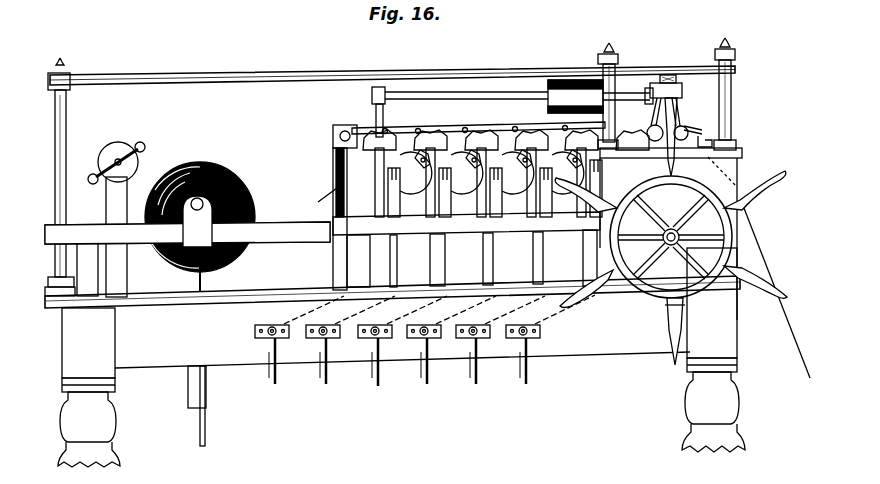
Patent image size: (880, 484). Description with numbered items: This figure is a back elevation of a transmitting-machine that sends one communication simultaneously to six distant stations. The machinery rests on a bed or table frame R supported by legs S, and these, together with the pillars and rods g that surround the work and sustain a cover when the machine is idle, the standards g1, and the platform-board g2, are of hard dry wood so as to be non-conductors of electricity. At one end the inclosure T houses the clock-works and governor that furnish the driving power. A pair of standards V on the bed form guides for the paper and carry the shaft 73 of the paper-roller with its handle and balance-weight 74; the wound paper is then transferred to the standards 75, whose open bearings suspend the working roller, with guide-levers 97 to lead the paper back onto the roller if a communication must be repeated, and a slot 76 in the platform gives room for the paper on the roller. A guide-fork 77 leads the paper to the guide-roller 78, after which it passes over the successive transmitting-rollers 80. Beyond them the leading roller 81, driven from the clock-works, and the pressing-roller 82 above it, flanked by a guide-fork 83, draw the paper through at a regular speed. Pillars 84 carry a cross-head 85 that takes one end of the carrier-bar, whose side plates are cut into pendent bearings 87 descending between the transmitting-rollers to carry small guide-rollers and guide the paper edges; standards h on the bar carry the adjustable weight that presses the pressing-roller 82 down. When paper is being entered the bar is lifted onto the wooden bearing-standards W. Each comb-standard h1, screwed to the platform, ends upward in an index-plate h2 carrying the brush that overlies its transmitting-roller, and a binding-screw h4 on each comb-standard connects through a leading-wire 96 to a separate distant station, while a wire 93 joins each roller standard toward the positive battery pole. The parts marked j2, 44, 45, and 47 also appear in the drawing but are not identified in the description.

The pillars and rods g is at (57, 183).
The standards g1 is at (87, 269).
The platform-board g2 is at (466, 223).
The standards h is at (460, 112).
The comb-standards h1 is at (478, 182).
The index-plate h2 is at (506, 138).
The binding-screw h4 is at (399, 339).
The top bracket rail j2 is at (478, 124).
The inclosure of the clock-works T is at (671, 234).
The bed or table frame R is at (392, 322).
The legs S is at (401, 357).
The standards V is at (187, 237).
The wooden bearing-standards W is at (465, 258).
The slat 44 is at (478, 259).
The connecting wire 45 is at (444, 307).
The rod 47 is at (208, 269).
The shaft 73 is at (116, 163).
The handle and balance-weight 74 is at (495, 188).
The standards 75 is at (187, 217).
The slot 76 is at (600, 96).
The guide-fork 77 is at (345, 193).
The guide-roller 78 is at (345, 165).
The transmitting-rollers 80 is at (488, 173).
The leading roller 81 is at (652, 126).
The pressing-roller 82 is at (688, 127).
The guide-fork 83 is at (706, 135).
The pillars 84 is at (345, 180).
The cross-head 85 is at (348, 130).
The pendent bearings 87 is at (496, 158).
The wire 93 is at (452, 255).
The leading-wire 96 is at (403, 367).
The guide-levers 97 is at (208, 389).